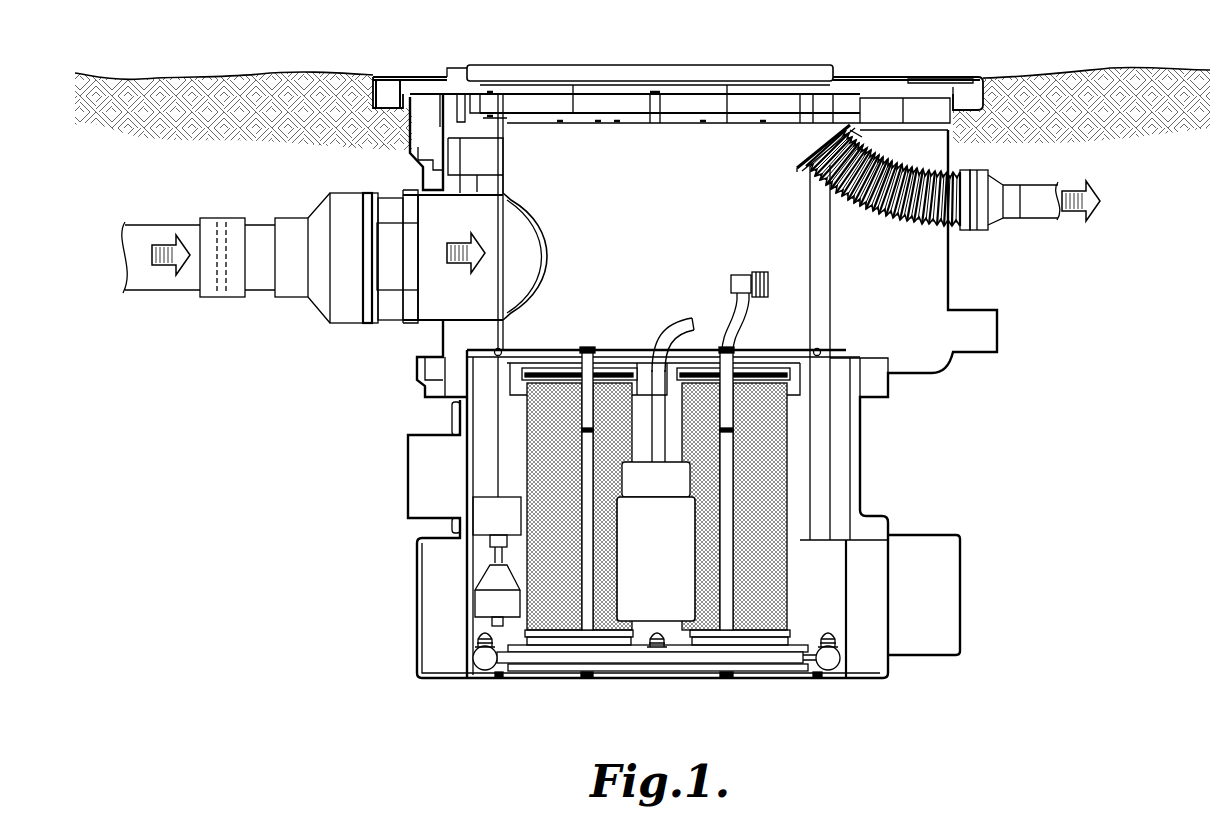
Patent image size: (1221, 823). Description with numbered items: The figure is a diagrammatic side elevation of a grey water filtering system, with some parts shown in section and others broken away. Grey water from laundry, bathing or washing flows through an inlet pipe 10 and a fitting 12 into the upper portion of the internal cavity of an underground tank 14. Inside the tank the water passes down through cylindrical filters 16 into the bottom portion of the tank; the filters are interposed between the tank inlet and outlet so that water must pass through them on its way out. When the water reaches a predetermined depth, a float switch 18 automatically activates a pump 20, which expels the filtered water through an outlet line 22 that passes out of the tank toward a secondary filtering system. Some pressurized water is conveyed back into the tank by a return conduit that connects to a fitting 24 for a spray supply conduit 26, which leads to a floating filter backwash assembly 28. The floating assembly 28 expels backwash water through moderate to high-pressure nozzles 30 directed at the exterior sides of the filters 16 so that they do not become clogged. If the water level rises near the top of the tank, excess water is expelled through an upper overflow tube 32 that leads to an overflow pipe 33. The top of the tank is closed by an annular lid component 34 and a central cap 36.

The inlet pipe 10 is at (152, 226).
The fitting 12 is at (292, 220).
The underground tank 14 is at (445, 50).
The cylindrical filters 16 is at (556, 365).
The float switch 18 is at (465, 597).
The pump 20 is at (686, 616).
The outlet line 22 is at (685, 318).
The fitting 24 is at (753, 273).
The spray supply conduit 26 is at (735, 330).
The floating filter backwash assembly 28 is at (543, 666).
The nozzles 30 is at (655, 648).
The upper overflow tube 32 is at (930, 216).
The overflow pipe 33 is at (1030, 186).
The annular lid component 34 is at (868, 78).
The central cap 36 is at (760, 64).